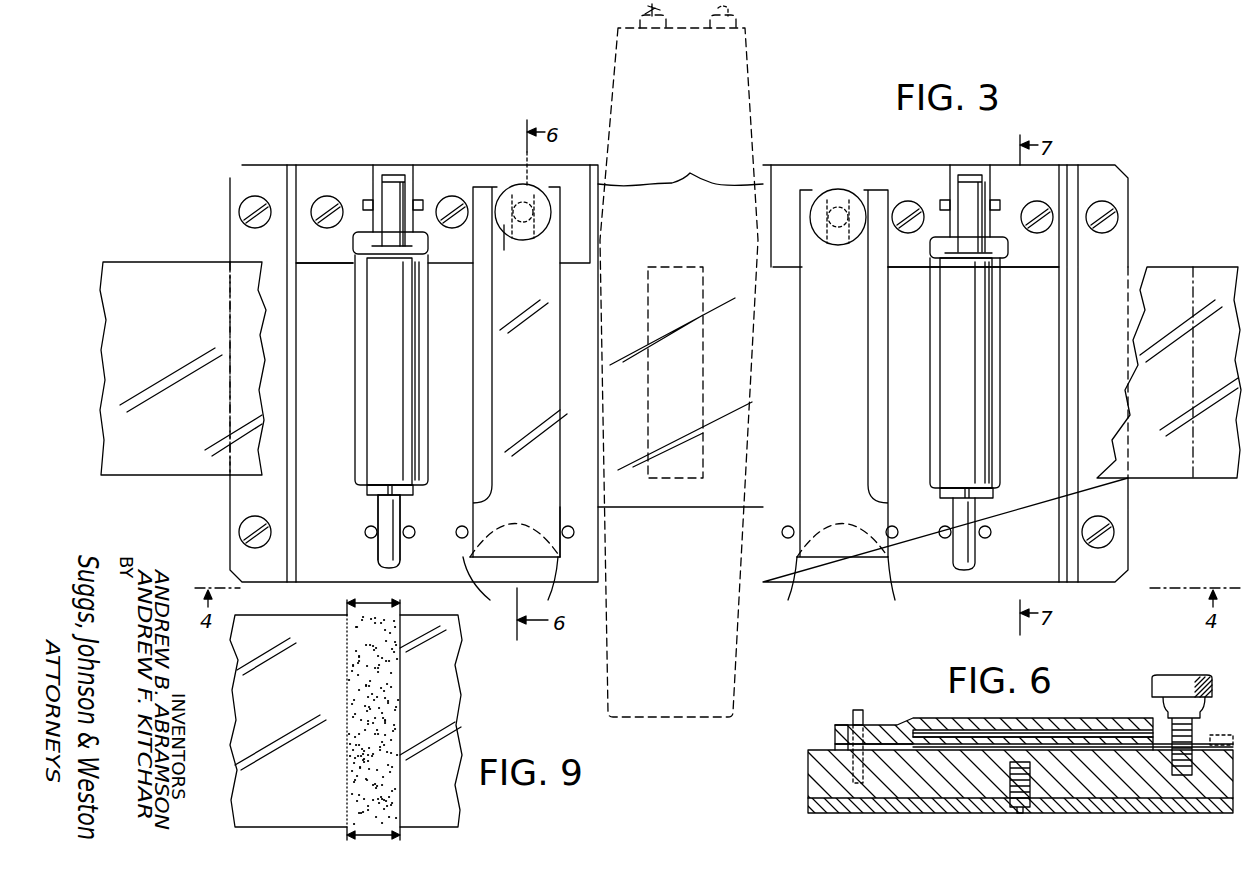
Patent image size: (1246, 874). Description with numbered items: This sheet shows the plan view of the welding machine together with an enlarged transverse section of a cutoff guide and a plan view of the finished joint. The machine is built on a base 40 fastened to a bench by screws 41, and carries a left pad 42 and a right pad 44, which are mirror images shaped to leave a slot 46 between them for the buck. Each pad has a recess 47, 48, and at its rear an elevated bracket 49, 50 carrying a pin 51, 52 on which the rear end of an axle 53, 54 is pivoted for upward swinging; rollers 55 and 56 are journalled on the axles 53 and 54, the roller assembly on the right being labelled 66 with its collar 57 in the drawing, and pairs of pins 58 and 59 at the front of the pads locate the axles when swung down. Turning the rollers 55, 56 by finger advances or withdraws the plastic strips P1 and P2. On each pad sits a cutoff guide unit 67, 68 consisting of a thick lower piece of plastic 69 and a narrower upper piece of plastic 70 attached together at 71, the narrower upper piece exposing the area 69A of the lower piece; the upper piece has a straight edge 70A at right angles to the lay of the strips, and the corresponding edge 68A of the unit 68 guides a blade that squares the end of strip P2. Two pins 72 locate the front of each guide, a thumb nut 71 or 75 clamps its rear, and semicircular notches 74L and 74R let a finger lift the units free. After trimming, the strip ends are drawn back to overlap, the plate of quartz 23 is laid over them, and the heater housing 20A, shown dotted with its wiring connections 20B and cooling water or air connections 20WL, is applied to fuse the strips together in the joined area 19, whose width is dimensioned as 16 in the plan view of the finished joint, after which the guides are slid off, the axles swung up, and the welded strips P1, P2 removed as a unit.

In FIG. 3, the base 40 is at (1133, 170).
In FIG. 3, the screws 41 is at (258, 204).
In FIG. 3, the left pad 42 is at (333, 459).
In FIG. 3, the right pad 44 is at (1053, 459).
In FIG. 3, the slot 46 is at (690, 173).
In FIG. 3, the recess 47 is at (362, 238).
In FIG. 3, the recess 48 is at (1000, 322).
In FIG. 3, the elevated bracket 49 is at (380, 164).
In FIG. 3, the elevated bracket 50 is at (990, 165).
In FIG. 3, the pin 51 is at (420, 215).
In FIG. 3, the pin 52 is at (1000, 215).
In FIG. 3, the axle 53 is at (400, 212).
In FIG. 3, the axle 54 is at (965, 213).
In FIG. 3, the roller 55 is at (378, 325).
In FIG. 3, the roller 56 is at (365, 250).
In FIG. 3, the collar 57 is at (938, 245).
In FIG. 3, the pins 58 is at (395, 530).
In FIG. 3, the pins 59 is at (965, 535).
In FIG. 3, the right cylinder body 66 is at (978, 444).
In FIG. 3, the cutoff guide unit 67 is at (546, 522).
In FIG. 6, the cutoff guide unit 67 is at (886, 722).
In FIG. 3, the cutoff guide unit 68 is at (843, 510).
In FIG. 3, the edge 68A is at (868, 392).
In FIG. 3, the lower piece of plastic 69 is at (480, 196).
In FIG. 6, the lower piece of plastic 69 is at (840, 740).
In FIG. 3, the exposed area 69A is at (533, 378).
In FIG. 3, the upper piece of plastic 70 is at (528, 208).
In FIG. 6, the upper piece of plastic 70 is at (1177, 677).
In FIG. 3, the straight edge 70A is at (488, 372).
In FIG. 6, the straight edge 70A is at (1067, 740).
In FIG. 3, the thumb nut 71 is at (512, 250).
In FIG. 6, the thumb nut 71 is at (857, 722).
In FIG. 3, the pins 72 is at (462, 540).
In FIG. 3, the cutout notch 74L is at (495, 578).
In FIG. 3, the cutout notch 74R is at (808, 575).
In FIG. 3, the thumb nut 75 is at (823, 208).
In FIG. 3, the plate of quartz 23 is at (725, 490).
In FIG. 3, the housing 20A is at (752, 92).
In FIG. 3, the wiring connections 20B is at (728, 14).
In FIG. 3, the cooling water connections 20WL is at (638, 14).
In FIG. 9, the seal strip 16 is at (388, 832).
In FIG. 9, the joined area 19 is at (362, 735).
In FIG. 3, the plastic strip P1 is at (1205, 288).
In FIG. 6, the plastic strip P1 is at (1053, 749).
In FIG. 9, the plastic strip P1 is at (445, 697).
In FIG. 3, the plastic strip P2 is at (162, 278).
In FIG. 6, the plastic strip P2 is at (1045, 732).
In FIG. 9, the plastic strip P2 is at (300, 697).